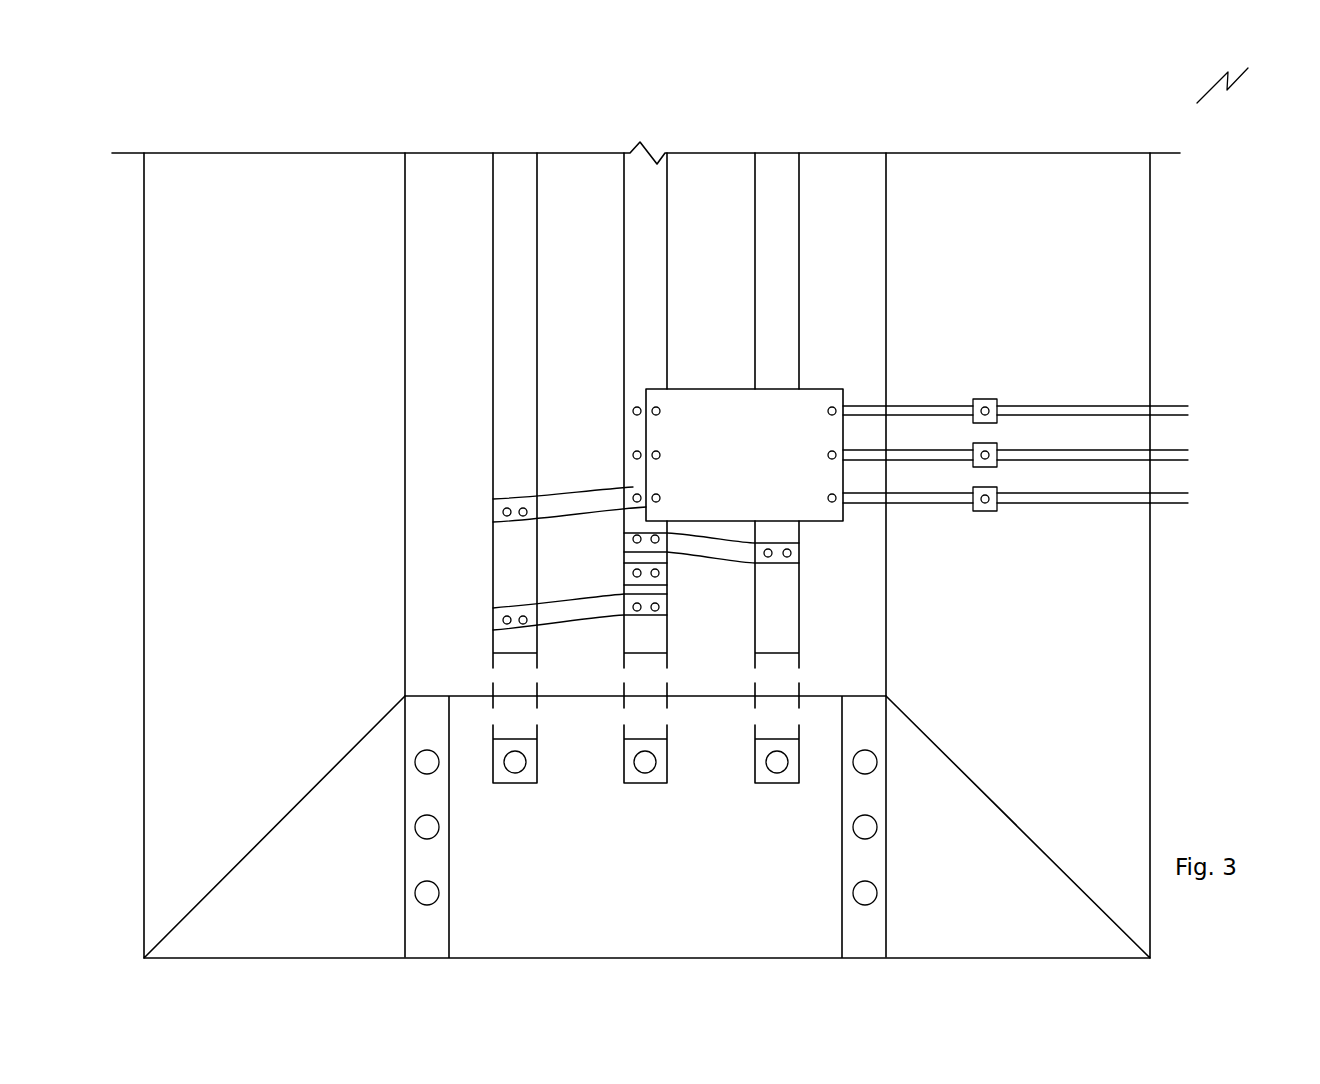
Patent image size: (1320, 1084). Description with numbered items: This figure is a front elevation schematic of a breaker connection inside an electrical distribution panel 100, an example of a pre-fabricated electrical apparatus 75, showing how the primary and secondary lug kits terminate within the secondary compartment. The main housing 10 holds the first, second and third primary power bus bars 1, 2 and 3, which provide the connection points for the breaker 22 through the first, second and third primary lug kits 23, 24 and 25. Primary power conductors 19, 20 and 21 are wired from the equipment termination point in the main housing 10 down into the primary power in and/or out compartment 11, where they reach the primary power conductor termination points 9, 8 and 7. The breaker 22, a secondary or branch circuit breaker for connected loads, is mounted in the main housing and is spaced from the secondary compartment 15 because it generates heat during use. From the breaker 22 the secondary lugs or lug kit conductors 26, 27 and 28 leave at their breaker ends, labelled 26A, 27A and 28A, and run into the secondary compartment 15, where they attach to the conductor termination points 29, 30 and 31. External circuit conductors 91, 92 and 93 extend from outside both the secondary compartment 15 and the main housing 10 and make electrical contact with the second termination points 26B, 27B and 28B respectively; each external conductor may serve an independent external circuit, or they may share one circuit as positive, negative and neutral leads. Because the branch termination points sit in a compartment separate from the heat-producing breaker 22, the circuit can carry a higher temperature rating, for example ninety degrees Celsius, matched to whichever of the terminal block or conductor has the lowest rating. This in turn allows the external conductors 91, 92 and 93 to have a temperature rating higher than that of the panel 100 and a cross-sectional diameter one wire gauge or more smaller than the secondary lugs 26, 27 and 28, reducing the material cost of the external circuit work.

The first primary power bus bar 1 is at (500, 228).
The second primary power bus bar 2 is at (641, 277).
The third primary power bus bar 3 is at (770, 233).
The primary power conductor termination point 7 is at (778, 784).
The primary power conductor termination point 8 is at (645, 784).
The primary power conductor termination point 9 is at (500, 784).
The main housing 10 is at (699, 327).
The primary power in and/or out compartment 11 is at (630, 891).
The secondary compartment 15 is at (239, 699).
The primary power conductor 19 is at (506, 692).
The primary power conductor 20 is at (642, 692).
The primary power conductor 21 is at (773, 692).
The breaker 22 is at (689, 458).
The first primary lug kit 23 is at (513, 612).
The second primary lug kit 24 is at (624, 568).
The third primary lug kit 25 is at (624, 533).
The secondary lug 26 is at (866, 406).
The first strip fastener 26A is at (632, 411).
The second termination point 26B is at (988, 406).
The secondary lug 27 is at (866, 457).
The second strip fastener 27A is at (632, 455).
The second termination point 27B is at (990, 459).
The secondary lug 28 is at (866, 503).
The third strip fastener 28A is at (632, 496).
The second termination point 28B is at (990, 503).
The conductor termination point 29 is at (1000, 410).
The conductor termination point 30 is at (1000, 455).
The conductor termination point 31 is at (995, 501).
The pre-fabricated electrical apparatus 75 is at (1237, 72).
The external circuit conductor 91 is at (1170, 408).
The external circuit conductor 92 is at (1175, 452).
The external circuit conductor 93 is at (1178, 495).
The electrical distribution panel 100 is at (522, 123).